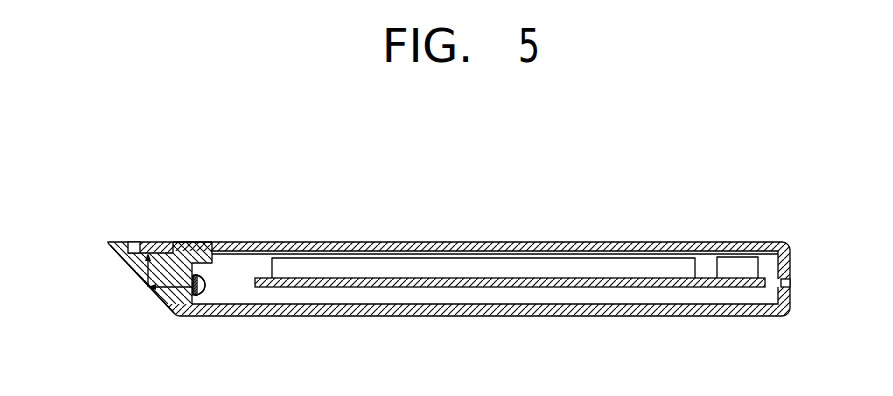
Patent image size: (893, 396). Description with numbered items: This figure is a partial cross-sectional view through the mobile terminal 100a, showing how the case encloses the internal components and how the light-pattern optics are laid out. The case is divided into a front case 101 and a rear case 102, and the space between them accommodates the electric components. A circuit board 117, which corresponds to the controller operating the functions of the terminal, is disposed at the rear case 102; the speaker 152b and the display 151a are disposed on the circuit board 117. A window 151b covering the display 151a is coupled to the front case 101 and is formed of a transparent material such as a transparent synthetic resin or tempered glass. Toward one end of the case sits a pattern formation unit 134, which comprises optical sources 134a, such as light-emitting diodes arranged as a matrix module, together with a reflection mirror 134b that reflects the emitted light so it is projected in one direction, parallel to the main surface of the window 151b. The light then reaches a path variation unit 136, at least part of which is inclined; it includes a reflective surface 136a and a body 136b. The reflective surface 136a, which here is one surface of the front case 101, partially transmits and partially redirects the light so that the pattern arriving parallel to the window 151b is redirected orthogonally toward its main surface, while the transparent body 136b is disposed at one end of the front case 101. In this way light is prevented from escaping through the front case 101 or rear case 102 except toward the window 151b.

The mobile terminal 100a is at (118, 194).
The front case 101 is at (783, 260).
The rear case 102 is at (788, 295).
The circuit board 117 is at (633, 283).
The pattern formation unit 134 is at (207, 293).
The optical source 134a is at (193, 296).
The reflection mirror 134b is at (208, 285).
The path variation unit 136 is at (134, 268).
The reflective surface 136a is at (160, 292).
The body 136b is at (175, 252).
The display 151a is at (566, 262).
The window 151b is at (482, 250).
The speaker 152b is at (741, 263).